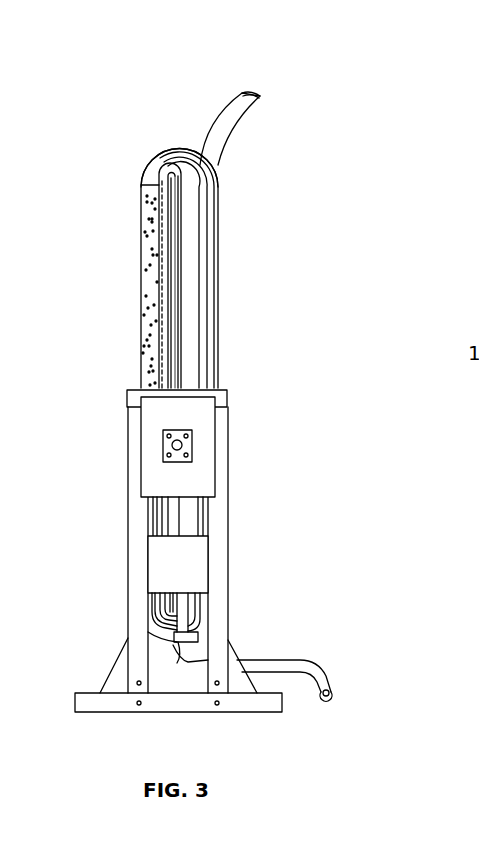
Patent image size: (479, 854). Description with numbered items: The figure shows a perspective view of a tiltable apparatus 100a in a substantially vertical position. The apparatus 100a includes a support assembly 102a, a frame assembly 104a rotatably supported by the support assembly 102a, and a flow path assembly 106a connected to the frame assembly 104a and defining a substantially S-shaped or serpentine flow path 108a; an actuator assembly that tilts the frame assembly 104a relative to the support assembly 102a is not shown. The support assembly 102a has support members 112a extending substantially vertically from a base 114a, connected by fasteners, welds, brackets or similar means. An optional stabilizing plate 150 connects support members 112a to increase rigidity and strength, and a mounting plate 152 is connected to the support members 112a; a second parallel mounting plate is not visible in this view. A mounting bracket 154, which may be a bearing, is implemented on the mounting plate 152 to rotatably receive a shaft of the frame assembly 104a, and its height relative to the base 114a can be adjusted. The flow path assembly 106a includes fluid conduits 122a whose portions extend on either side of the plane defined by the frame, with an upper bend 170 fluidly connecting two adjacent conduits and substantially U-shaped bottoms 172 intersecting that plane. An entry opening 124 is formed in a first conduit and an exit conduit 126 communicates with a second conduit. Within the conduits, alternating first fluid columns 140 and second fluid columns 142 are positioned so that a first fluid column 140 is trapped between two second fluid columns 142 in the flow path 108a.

The apparatus 100a is at (376, 56).
The support assembly 102a is at (230, 640).
The frame assembly 104a is at (162, 447).
The flow path assembly 106a is at (138, 251).
The flow path 108a is at (190, 245).
The support members 112a is at (229, 520).
The base 114a is at (160, 712).
The fluid conduit 122a is at (216, 298).
The entry opening 124 is at (251, 93).
The exit conduit 126 is at (332, 670).
The first fluid column 140 is at (188, 198).
The second fluid column 142 is at (150, 290).
The stabilizing plate 150 is at (209, 572).
The mounting plate 152 is at (216, 477).
The mounting bracket 154 is at (185, 441).
The upper bend 170 is at (167, 150).
The bottom 172 is at (178, 644).